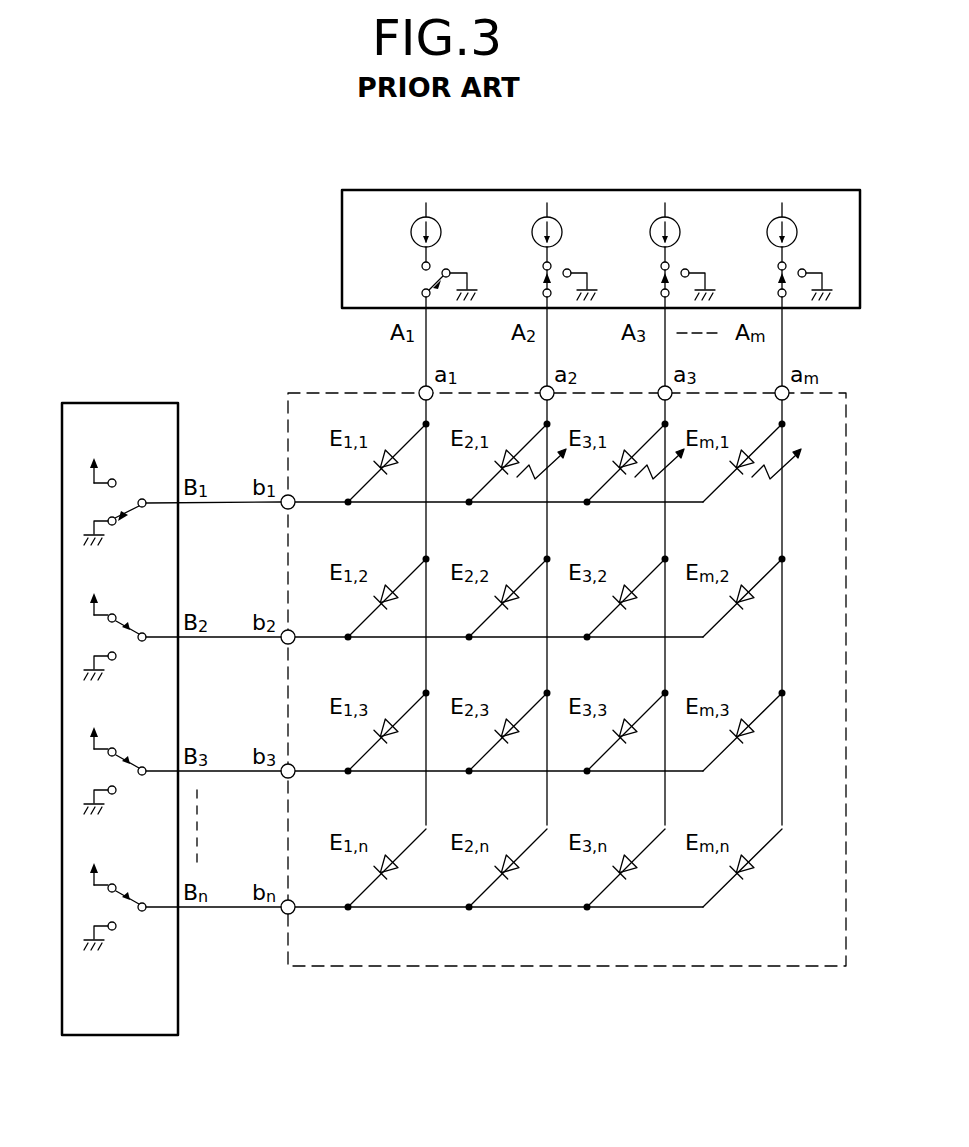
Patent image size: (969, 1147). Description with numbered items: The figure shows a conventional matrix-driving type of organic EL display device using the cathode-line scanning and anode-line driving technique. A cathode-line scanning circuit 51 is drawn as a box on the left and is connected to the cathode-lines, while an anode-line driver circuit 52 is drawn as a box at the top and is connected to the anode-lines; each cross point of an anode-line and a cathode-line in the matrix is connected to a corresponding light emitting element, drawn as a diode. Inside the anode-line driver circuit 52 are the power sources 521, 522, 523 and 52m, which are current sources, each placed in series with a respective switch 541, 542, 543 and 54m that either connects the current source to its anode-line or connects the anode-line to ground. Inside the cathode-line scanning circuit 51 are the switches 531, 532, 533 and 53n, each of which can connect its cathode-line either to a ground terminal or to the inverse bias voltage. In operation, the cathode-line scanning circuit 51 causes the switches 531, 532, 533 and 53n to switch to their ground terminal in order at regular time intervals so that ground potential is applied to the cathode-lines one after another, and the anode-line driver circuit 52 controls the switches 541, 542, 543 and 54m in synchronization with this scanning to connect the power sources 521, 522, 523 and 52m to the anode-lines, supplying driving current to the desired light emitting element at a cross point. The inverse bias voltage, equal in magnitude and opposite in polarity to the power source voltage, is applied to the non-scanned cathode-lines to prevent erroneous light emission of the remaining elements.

The cathode-line scanning circuit 51 is at (114, 392).
The anode-line driver circuit 52 is at (326, 254).
The power source 521 is at (401, 232).
The power source 522 is at (521, 232).
The power source 523 is at (639, 232).
The power source 52m is at (751, 232).
The switch 531 is at (182, 484).
The switch 532 is at (182, 622).
The switch 533 is at (182, 756).
The switch 53n is at (182, 892).
The switch 541 is at (421, 285).
The switch 542 is at (543, 285).
The switch 543 is at (660, 285).
The switch 54m is at (776, 285).